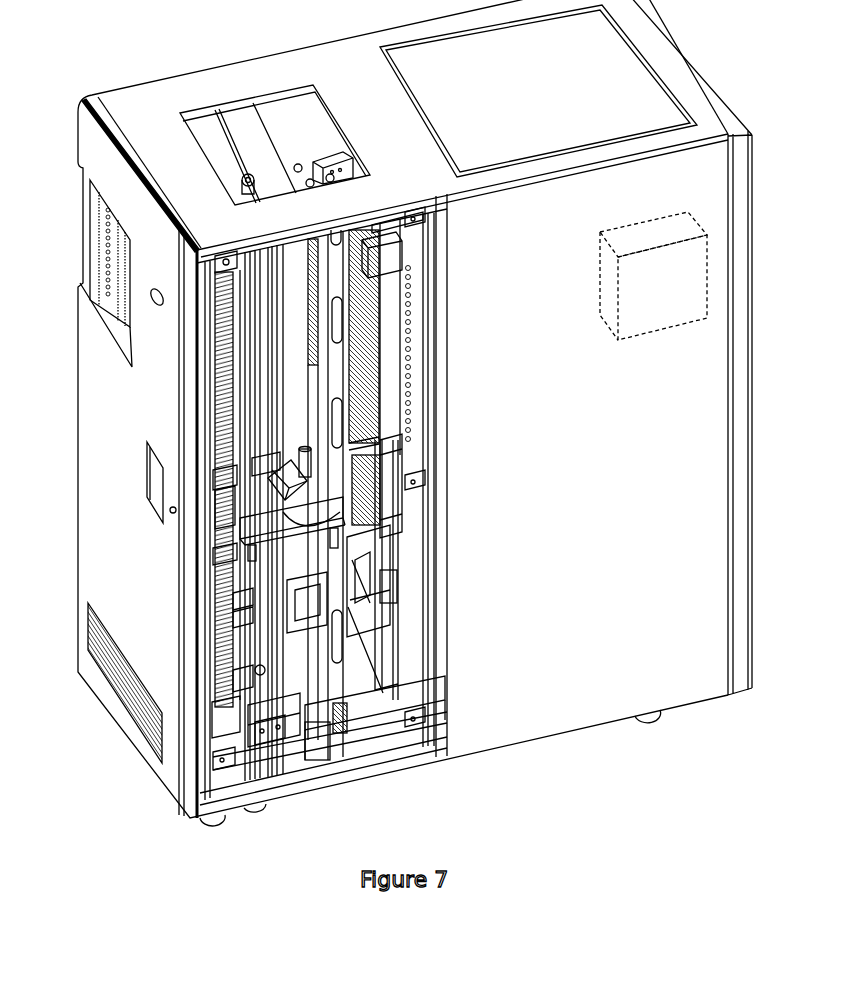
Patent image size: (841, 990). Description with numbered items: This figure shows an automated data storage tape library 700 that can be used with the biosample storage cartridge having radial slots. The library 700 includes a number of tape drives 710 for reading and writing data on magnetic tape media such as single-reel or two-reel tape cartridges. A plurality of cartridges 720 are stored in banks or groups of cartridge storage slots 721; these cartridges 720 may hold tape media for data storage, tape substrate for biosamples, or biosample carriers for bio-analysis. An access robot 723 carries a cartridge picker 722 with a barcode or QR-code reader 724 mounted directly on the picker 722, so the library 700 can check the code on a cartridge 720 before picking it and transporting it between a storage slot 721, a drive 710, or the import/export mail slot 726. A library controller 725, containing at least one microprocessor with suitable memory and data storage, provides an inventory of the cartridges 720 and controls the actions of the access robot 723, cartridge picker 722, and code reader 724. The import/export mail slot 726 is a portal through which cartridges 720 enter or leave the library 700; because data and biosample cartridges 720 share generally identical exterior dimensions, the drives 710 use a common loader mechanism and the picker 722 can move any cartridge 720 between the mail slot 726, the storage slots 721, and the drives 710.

The automated data storage tape library 700 is at (237, 77).
The tape drive 710 is at (393, 527).
The cartridge 720 is at (383, 368).
The cartridge storage slot 721 is at (218, 358).
The cartridge picker 722 is at (372, 537).
The access robot 723 is at (288, 733).
The barcode or QR-code reader 724 is at (278, 478).
The library controller 725 is at (600, 282).
The import/export mail slot 726 is at (103, 243).